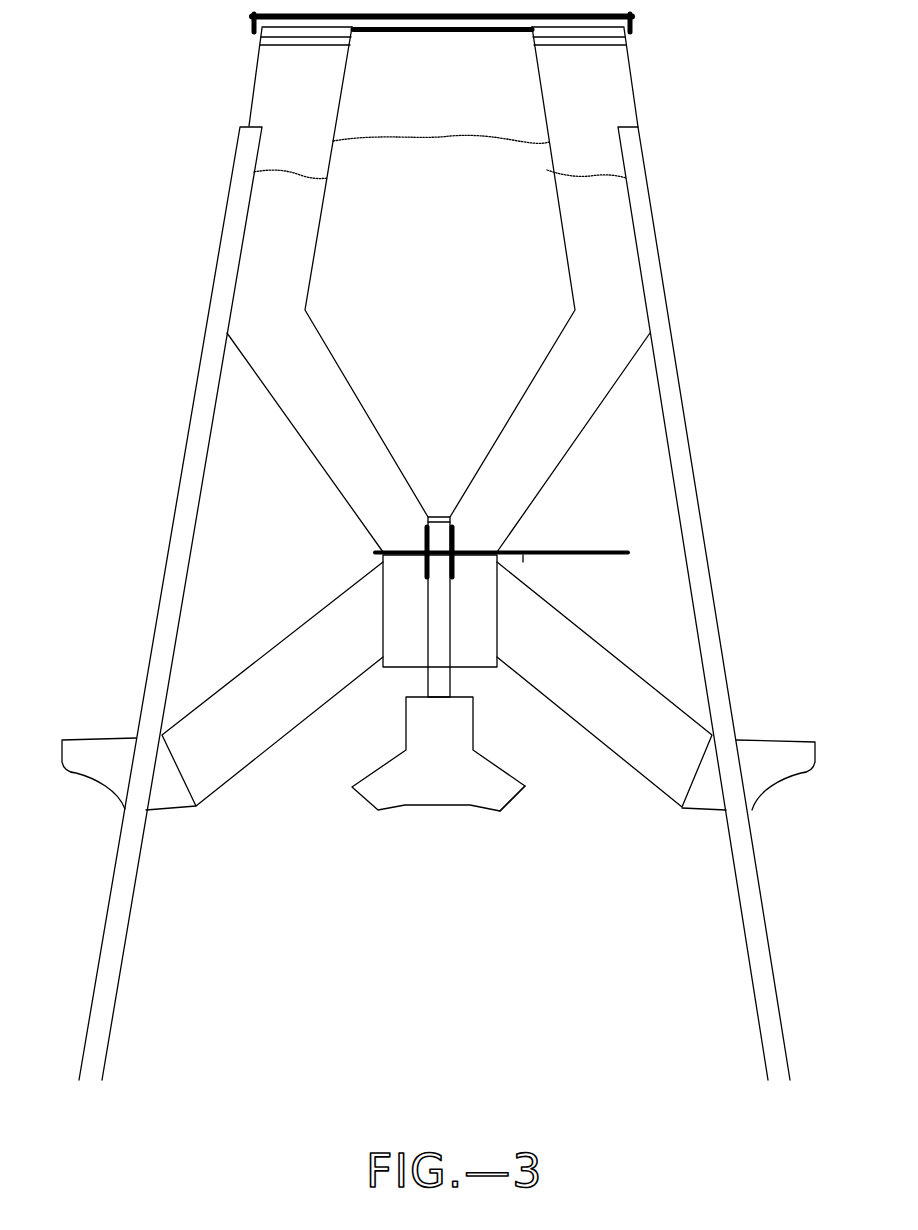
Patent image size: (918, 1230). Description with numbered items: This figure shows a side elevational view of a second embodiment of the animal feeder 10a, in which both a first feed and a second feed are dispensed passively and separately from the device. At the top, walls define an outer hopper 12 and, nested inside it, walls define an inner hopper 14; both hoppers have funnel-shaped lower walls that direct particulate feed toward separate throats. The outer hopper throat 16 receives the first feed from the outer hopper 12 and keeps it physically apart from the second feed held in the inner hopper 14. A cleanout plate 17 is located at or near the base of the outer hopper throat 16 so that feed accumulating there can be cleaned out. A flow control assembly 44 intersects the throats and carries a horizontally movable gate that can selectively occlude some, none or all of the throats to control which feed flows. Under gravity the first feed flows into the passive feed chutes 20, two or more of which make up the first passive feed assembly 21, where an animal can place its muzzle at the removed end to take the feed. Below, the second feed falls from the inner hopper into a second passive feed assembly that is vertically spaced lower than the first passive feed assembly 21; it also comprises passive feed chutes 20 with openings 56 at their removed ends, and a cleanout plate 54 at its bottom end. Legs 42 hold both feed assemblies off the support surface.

The animal feeder 10a is at (703, 80).
The outer hopper 12 is at (634, 70).
The inner hopper 14 is at (547, 113).
The outer hopper throat 16 is at (500, 604).
The cleanout plate 17 is at (475, 670).
The passive feed chute 20 is at (592, 628).
The first passive feed assembly 21 is at (663, 661).
The legs 42 is at (721, 565).
The flow control assembly 44 is at (576, 548).
The cleanout plate 54 is at (448, 810).
The openings 56 is at (511, 804).